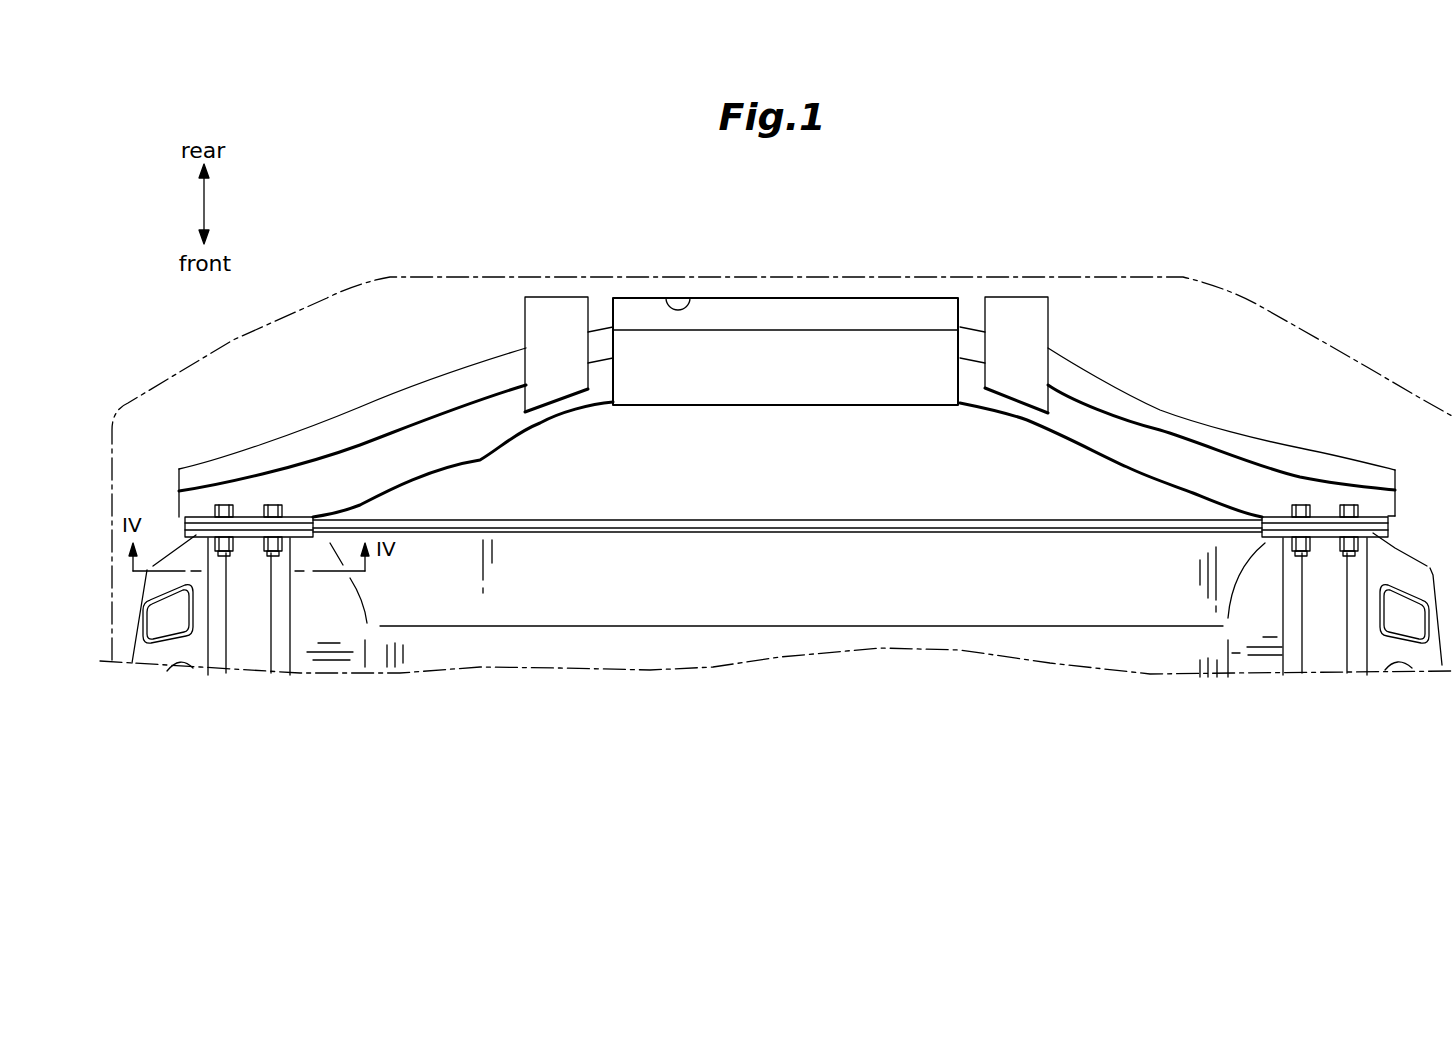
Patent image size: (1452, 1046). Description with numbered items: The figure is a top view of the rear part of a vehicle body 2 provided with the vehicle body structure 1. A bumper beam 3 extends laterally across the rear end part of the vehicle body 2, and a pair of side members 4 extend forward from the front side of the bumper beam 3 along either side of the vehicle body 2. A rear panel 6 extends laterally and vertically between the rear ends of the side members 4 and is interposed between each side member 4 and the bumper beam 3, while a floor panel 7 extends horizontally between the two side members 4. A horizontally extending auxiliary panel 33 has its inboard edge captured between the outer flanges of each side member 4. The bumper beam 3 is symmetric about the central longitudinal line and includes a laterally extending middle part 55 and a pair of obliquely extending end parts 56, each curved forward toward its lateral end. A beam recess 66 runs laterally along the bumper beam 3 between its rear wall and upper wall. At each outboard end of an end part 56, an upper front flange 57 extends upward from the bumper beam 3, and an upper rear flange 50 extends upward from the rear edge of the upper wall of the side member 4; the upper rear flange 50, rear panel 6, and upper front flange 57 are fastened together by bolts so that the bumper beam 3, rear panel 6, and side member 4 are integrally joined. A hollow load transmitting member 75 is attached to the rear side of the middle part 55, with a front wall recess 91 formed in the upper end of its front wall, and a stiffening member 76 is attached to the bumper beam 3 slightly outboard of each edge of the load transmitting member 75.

The vehicle body structure 1 is at (1217, 235).
The vehicle body 2 is at (1275, 298).
The bumper beam 3 is at (461, 392).
The side member 4 is at (252, 660).
The rear panel 6 is at (702, 521).
The floor panel 7 is at (882, 565).
The auxiliary panel 33 is at (163, 650).
The upper rear flange 50 is at (195, 536).
The middle part 55 is at (972, 333).
The end part 56 is at (376, 463).
The upper front flange 57 is at (294, 515).
The beam recess 66 is at (436, 418).
The load transmitting member 75 is at (810, 305).
The stiffening member 76 is at (563, 310).
The front wall recess 91 is at (690, 300).